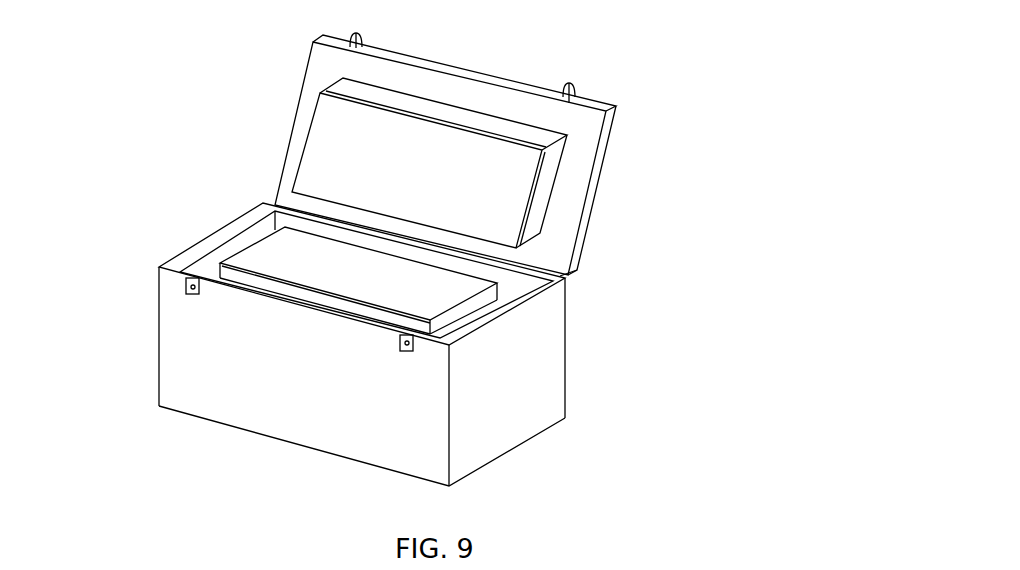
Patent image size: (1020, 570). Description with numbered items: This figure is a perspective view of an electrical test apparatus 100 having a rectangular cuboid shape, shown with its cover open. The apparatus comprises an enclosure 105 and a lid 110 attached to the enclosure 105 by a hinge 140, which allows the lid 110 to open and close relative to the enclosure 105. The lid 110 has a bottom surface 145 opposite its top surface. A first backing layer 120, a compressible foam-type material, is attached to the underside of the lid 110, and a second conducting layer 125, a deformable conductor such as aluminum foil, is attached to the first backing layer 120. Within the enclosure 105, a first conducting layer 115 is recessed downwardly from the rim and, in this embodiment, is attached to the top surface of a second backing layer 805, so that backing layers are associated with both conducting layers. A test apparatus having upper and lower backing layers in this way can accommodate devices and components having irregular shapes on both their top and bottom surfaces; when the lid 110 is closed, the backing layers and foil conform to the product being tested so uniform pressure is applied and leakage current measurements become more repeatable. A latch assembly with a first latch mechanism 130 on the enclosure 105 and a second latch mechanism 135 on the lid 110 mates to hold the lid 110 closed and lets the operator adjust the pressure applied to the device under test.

The electrical test apparatus 100 is at (398, 259).
The enclosure 105 is at (312, 344).
The lid 110 is at (505, 164).
The first conducting layer 115 is at (393, 288).
The backing layer 120 is at (514, 174).
The second conducting layer 125 is at (636, 283).
The first latch mechanism 130 is at (299, 380).
The second latch mechanism 135 is at (512, 68).
The hinge 140 is at (356, 248).
The bottom surface 145 is at (500, 158).
The second backing layer 805 is at (545, 331).